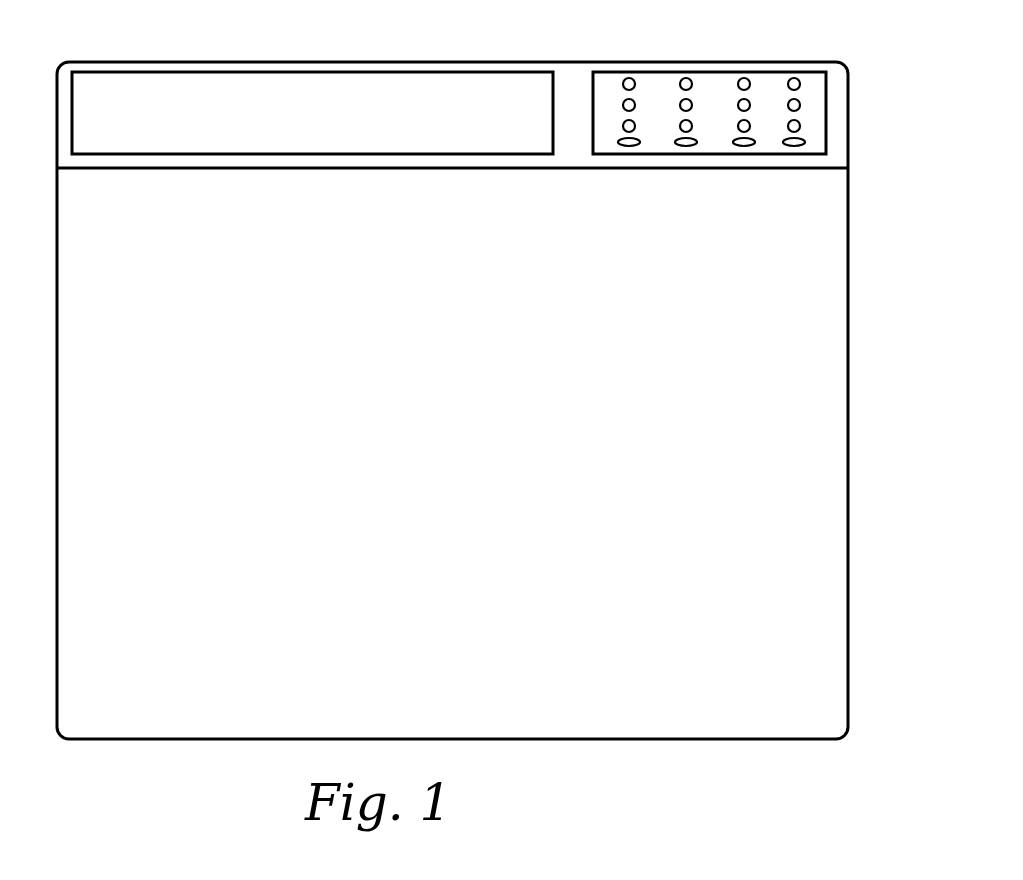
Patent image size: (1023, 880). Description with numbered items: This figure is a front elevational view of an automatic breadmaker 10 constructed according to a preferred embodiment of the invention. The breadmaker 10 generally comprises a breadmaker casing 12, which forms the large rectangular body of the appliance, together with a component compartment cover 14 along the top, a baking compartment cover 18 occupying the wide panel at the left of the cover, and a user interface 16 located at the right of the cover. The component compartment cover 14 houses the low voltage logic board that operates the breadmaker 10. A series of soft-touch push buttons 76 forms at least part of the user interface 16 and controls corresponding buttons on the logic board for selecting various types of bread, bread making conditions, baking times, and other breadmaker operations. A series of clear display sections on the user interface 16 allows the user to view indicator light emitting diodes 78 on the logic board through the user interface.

The automatic breadmaker 10 is at (867, 360).
The breadmaker casing 12 is at (848, 285).
The component compartment cover 14 is at (848, 95).
The user interface 16 is at (760, 128).
The baking compartment cover 18 is at (203, 63).
The soft-touch push buttons 76 is at (686, 147).
The indicator light emitting diodes 78 is at (800, 107).